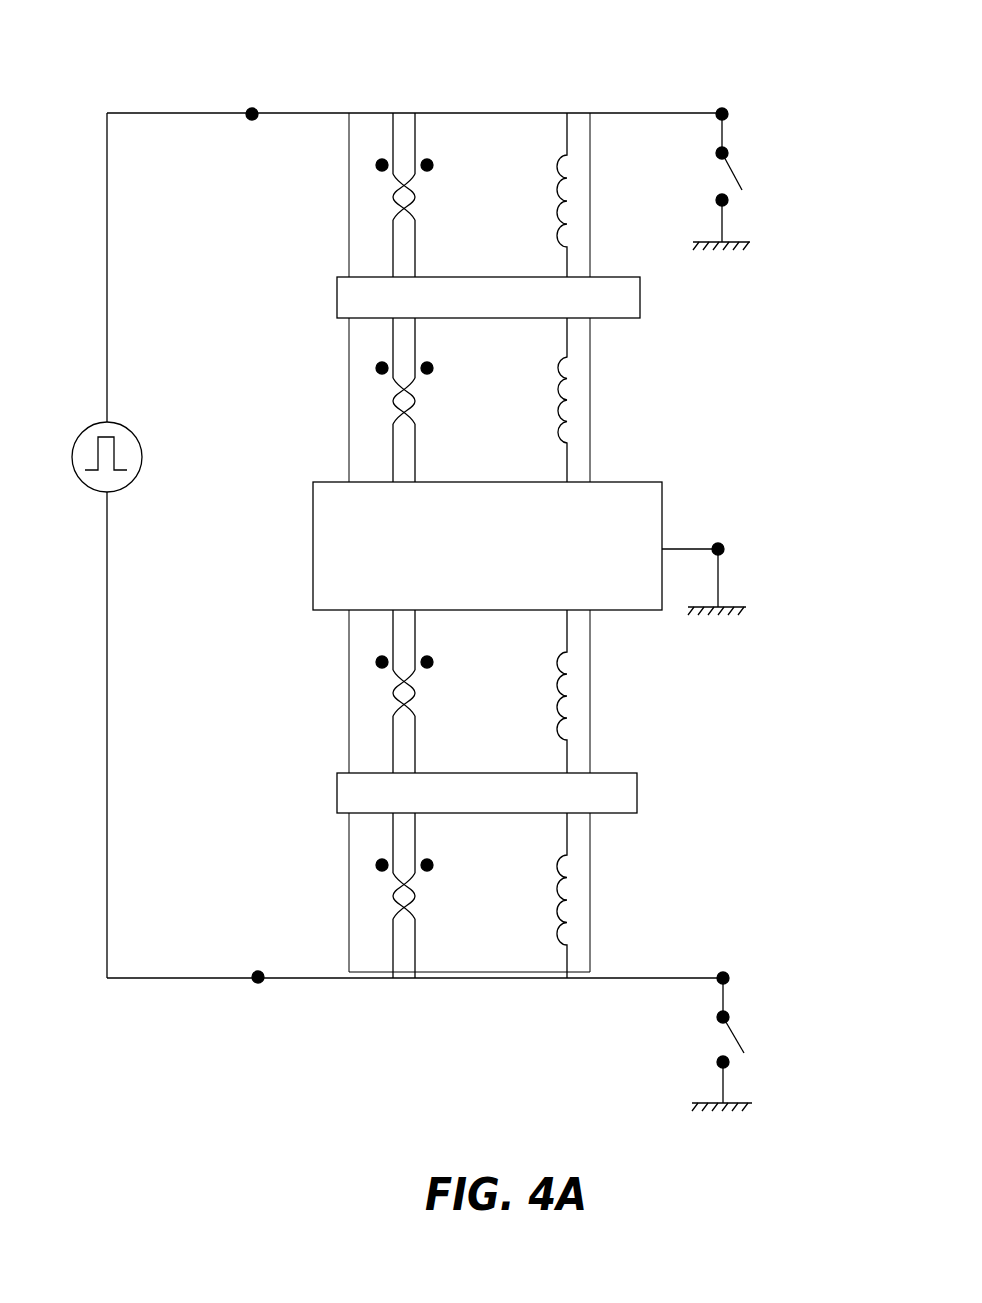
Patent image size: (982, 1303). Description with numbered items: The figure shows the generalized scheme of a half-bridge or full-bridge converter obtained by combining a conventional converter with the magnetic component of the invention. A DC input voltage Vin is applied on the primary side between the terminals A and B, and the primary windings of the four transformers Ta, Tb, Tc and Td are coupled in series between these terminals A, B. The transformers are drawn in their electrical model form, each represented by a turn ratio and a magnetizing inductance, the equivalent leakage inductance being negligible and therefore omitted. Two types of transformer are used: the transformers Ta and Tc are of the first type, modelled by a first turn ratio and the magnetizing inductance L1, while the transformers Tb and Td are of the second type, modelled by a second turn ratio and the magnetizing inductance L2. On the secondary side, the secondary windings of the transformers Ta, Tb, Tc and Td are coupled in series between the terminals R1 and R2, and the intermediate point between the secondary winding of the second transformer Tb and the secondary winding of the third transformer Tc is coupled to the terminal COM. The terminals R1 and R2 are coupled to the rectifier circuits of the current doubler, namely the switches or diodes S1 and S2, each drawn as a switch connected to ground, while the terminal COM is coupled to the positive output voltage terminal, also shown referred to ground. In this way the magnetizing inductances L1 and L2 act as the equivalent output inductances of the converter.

The DC input voltage Vin is at (123, 457).
The terminal A is at (246, 104).
The terminal B is at (253, 969).
The first transformer Ta is at (593, 111).
The second transformer Tb is at (593, 315).
The third transformer Tc is at (593, 606).
The fourth transformer Td is at (593, 808).
The magnetizing inductance of the first-type transformers L1 is at (539, 443).
The magnetizing inductance of the second-type transformers L2 is at (539, 645).
The terminal COM is at (714, 578).
The terminal R1 is at (736, 103).
The terminal R2 is at (732, 967).
The switch S1 is at (753, 1030).
The switch S2 is at (752, 166).